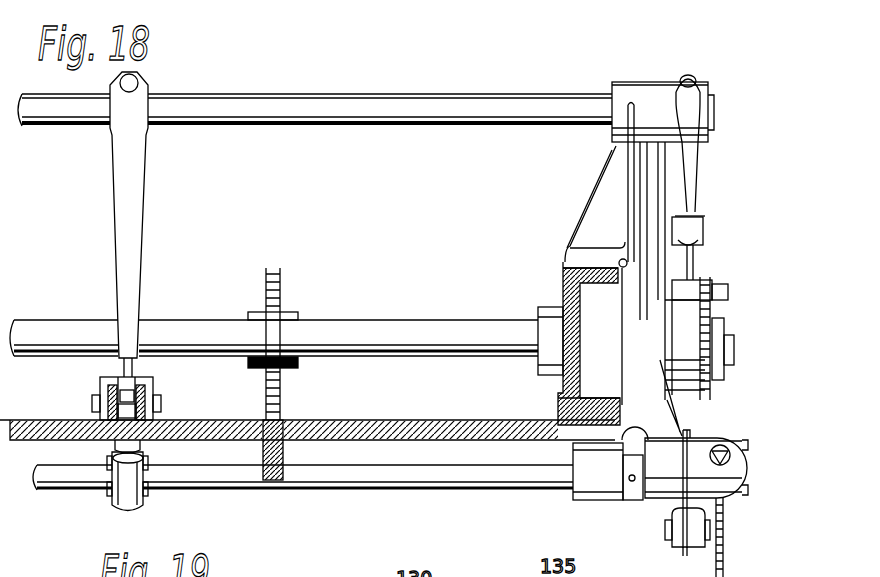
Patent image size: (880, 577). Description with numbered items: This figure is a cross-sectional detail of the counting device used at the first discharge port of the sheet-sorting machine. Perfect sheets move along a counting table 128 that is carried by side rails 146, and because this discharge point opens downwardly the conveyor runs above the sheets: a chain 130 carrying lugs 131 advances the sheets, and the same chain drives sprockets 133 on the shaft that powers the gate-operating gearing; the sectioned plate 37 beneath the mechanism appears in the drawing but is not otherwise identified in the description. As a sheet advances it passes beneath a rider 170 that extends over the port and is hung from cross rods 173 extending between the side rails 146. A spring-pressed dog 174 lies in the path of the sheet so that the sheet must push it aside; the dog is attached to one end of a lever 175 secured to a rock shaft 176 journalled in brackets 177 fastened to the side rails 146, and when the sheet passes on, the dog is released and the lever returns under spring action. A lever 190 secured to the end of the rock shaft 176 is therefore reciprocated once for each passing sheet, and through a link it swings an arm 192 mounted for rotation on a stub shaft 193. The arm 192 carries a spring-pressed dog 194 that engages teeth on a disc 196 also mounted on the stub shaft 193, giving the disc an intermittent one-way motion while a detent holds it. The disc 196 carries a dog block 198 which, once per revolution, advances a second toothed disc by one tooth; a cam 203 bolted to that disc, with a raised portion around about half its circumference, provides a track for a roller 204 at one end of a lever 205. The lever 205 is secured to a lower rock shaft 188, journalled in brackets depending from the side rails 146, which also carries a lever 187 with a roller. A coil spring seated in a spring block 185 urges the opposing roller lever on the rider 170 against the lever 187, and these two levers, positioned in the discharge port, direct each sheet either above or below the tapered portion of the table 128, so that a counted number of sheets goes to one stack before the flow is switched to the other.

The base plate 37 is at (458, 420).
The counting table 128 is at (400, 420).
The chain 130 is at (283, 268).
The lug 131 is at (285, 420).
The sprocket 133 is at (289, 312).
The side rail 146 is at (568, 280).
The rider 170 is at (100, 396).
The cross rod 173 is at (418, 335).
The spring-pressed dog 174 is at (132, 418).
The lever 175 is at (133, 215).
The rock shaft 176 is at (355, 105).
The bracket 177 is at (612, 180).
The spring block 185 is at (145, 385).
The lever 187 is at (128, 505).
The rock shaft 188 is at (410, 483).
The lever 190 is at (690, 178).
The arm 192 is at (683, 322).
The stub shaft 193 is at (735, 350).
The spring-pressed dog 194 is at (703, 285).
The disc 196 is at (705, 352).
The dog block 198 is at (712, 400).
The cam 203 is at (712, 550).
The roller 204 is at (683, 545).
The lever 205 is at (672, 518).